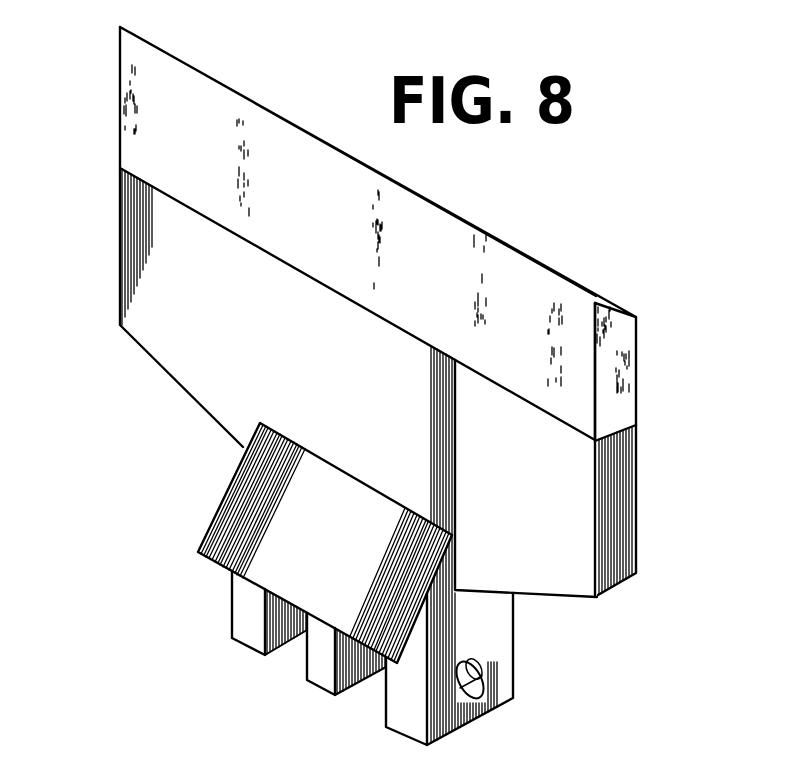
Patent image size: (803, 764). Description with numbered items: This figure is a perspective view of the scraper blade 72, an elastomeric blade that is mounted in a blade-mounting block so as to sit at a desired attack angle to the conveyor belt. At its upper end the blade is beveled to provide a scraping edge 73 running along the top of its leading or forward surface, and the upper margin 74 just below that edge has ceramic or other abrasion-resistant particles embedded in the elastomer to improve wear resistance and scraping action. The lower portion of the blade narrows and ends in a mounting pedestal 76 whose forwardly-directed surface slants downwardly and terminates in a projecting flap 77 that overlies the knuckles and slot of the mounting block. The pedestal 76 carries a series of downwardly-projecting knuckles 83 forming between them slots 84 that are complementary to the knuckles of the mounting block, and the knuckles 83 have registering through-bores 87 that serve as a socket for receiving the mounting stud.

The blade 72 is at (625, 450).
The scraping edge 73 is at (122, 25).
The upper margin 74 is at (135, 118).
The mounting pedestal 76 is at (272, 468).
The projecting flap 77 is at (222, 528).
The knuckles 83 is at (248, 627).
The slots 84 is at (283, 648).
The through-bores 87 is at (478, 692).